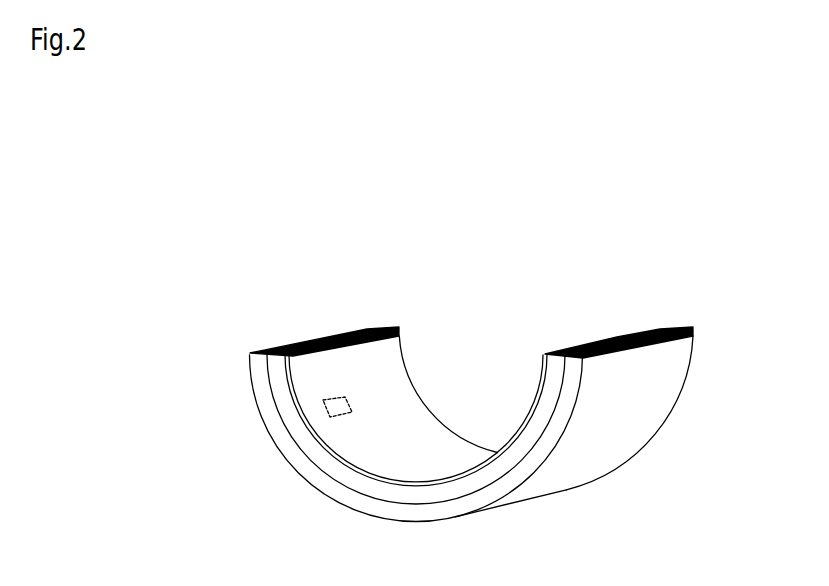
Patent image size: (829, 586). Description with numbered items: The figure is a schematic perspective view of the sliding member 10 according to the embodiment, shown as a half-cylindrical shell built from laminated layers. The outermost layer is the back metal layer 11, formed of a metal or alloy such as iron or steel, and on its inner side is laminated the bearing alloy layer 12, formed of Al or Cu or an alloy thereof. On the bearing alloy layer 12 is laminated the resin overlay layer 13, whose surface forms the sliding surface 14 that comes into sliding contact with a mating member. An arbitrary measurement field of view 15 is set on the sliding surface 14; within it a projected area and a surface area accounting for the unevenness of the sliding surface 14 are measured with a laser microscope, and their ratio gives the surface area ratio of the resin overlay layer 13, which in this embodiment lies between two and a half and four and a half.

The sliding member 10 is at (672, 293).
The back metal layer 11 is at (278, 433).
The bearing alloy layer 12 is at (471, 482).
The resin overlay layer 13 is at (290, 367).
The sliding surface 14 is at (388, 358).
The measurement field of view 15 is at (352, 405).